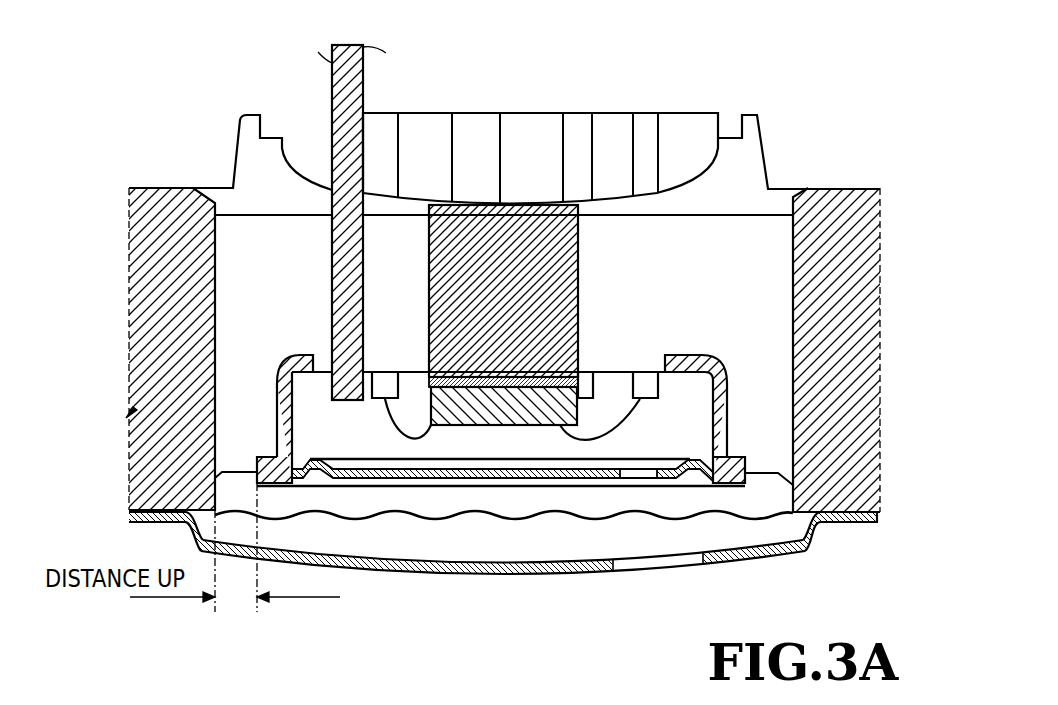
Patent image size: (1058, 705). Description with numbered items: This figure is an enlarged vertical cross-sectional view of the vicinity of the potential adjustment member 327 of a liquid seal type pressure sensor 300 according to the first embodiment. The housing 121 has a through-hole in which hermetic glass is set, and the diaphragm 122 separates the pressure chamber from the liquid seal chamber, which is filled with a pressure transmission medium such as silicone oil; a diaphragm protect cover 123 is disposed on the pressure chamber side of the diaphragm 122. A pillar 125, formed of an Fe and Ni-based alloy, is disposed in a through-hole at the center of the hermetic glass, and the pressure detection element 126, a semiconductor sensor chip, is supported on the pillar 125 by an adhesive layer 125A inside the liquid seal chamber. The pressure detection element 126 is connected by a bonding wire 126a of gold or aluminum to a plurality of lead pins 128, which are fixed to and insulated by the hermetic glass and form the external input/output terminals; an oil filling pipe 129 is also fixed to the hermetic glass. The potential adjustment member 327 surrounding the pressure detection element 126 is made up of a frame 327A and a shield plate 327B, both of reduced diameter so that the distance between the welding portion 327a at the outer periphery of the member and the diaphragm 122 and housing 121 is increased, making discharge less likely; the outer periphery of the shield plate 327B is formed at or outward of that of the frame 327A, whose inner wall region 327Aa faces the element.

The liquid seal type pressure sensor 300 is at (692, 86).
The housing 121 is at (152, 212).
The diaphragm 122 is at (745, 518).
The diaphragm protect cover 123 is at (522, 568).
The pillar 125 is at (557, 268).
The adhesive layer 125A is at (462, 386).
The pressure detection element 126 is at (510, 408).
The bonding wire 126a is at (633, 420).
The lead pins 128 is at (540, 110).
The oil filling pipe 129 is at (468, 120).
The potential adjustment member 327 is at (738, 370).
The frame 327A is at (176, 386).
The inner surface of side wall 327Aa is at (312, 438).
The welding portion 327a is at (258, 472).
The shield plate 327B is at (400, 562).